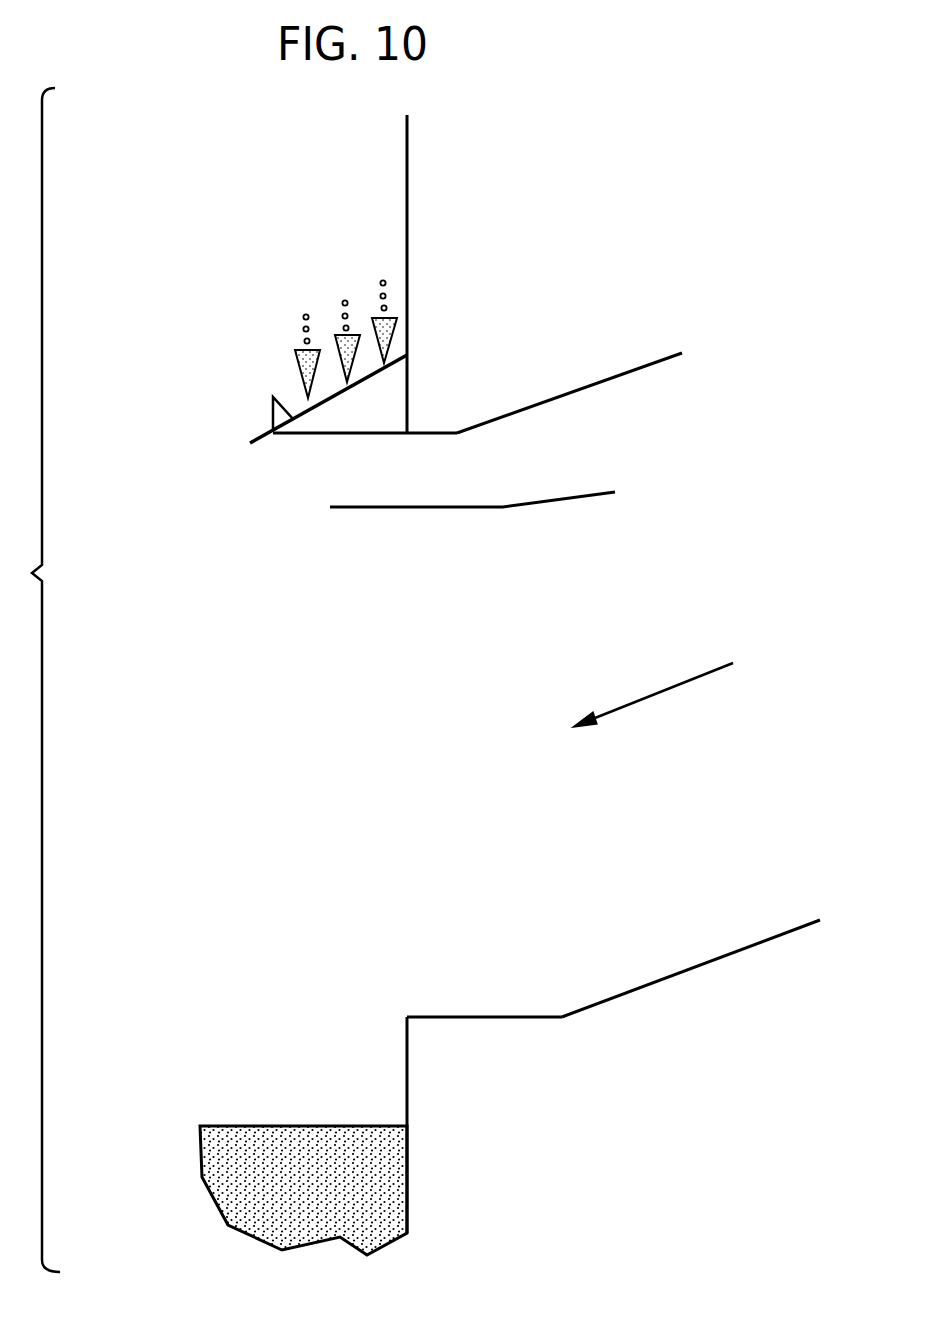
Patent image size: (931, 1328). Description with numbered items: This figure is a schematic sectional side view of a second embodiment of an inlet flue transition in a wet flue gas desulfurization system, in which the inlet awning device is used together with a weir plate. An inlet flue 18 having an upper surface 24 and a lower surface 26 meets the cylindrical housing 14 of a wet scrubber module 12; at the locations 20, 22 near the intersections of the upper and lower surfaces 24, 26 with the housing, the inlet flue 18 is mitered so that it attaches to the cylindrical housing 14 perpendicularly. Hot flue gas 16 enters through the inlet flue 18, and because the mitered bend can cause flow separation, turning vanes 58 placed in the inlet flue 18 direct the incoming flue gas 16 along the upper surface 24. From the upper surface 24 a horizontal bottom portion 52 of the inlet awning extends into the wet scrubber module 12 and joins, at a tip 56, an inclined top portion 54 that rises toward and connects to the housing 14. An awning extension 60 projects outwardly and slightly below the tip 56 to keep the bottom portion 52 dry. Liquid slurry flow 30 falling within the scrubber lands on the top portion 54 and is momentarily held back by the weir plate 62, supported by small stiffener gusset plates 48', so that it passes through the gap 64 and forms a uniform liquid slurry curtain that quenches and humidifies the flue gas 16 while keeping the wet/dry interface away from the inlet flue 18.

The wet scrubber module 12 is at (150, 960).
The cylindrical housing 14 is at (407, 197).
The flue gas 16 is at (666, 686).
The inlet flue 18 is at (522, 935).
The location near intersection of upper surface and housing 20 is at (428, 413).
The location near intersection of lower surface and housing 22 is at (430, 1038).
The upper surface 24 is at (648, 363).
The lower surface 26 is at (683, 973).
The liquid slurry flow 30 is at (383, 280).
The stiffener gusset plates 48' is at (253, 377).
The bottom portion 52 is at (387, 436).
The top portion 54 is at (305, 413).
The tip 56 is at (273, 434).
The turning vanes 58 is at (442, 512).
The awning extension 60 is at (250, 443).
The weir plate 62 is at (267, 405).
The gap 64 is at (252, 418).